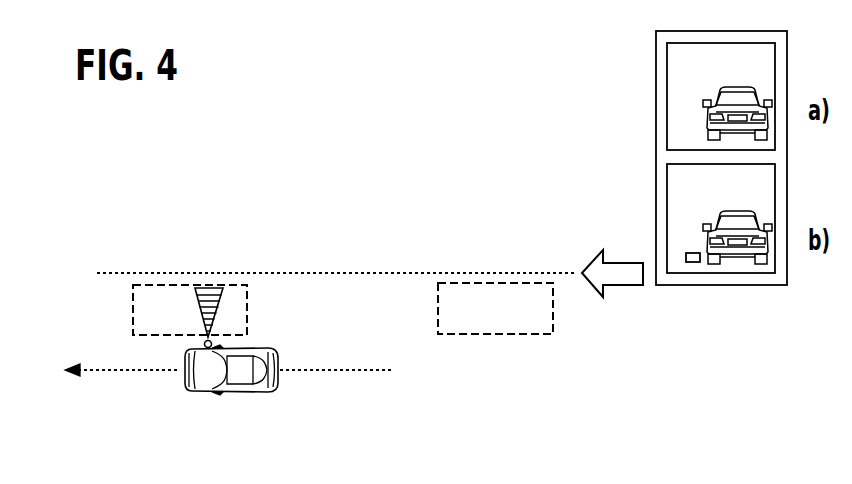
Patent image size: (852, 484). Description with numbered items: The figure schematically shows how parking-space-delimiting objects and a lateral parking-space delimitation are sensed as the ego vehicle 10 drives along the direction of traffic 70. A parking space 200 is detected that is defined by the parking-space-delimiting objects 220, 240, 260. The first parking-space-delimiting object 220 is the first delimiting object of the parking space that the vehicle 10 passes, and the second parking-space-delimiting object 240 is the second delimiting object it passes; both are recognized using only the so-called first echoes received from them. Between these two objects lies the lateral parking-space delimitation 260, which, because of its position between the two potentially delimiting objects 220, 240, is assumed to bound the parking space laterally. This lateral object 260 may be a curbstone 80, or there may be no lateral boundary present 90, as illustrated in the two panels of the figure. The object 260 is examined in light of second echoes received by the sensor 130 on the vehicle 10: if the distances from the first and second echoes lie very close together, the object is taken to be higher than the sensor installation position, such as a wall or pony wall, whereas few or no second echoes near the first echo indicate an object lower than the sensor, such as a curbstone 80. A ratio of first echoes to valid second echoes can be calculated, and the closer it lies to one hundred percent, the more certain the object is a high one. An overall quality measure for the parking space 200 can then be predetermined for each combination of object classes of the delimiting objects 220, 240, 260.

The vehicle 10 is at (279, 381).
The direction of traffic 70 is at (140, 376).
The curbstone 80 is at (693, 262).
The no lateral boundary present 90 is at (688, 137).
The sensor 130 is at (204, 344).
The parking space 200 is at (380, 317).
The first parking-space-delimiting object 220 is at (553, 305).
The second parking-space-delimiting object 240 is at (133, 307).
The lateral parking-space delimitation 260 is at (328, 272).